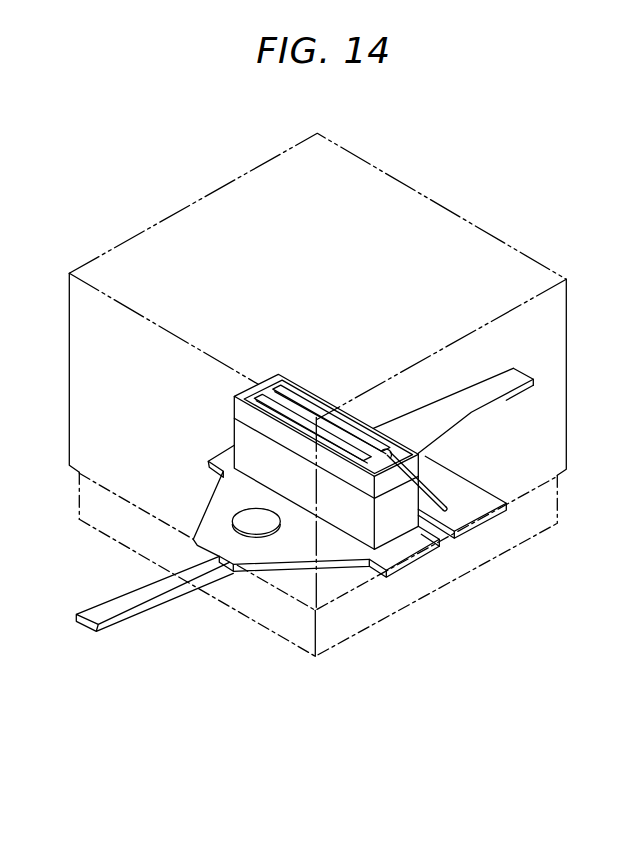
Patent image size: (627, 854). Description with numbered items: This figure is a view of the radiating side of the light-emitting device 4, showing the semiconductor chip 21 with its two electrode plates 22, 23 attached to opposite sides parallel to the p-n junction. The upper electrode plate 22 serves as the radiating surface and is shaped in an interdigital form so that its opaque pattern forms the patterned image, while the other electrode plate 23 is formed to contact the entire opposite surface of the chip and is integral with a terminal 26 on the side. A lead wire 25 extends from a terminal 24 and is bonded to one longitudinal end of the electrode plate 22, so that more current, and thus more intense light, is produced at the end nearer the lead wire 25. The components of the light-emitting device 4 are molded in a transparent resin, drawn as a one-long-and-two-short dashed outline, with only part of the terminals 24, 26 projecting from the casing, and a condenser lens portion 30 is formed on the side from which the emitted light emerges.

The housing 4 is at (131, 192).
The condenser lens portion 30 is at (372, 210).
The semiconductor chip 21 is at (400, 522).
The electrode plate 22 is at (380, 453).
The electrode plate 23 is at (430, 534).
The terminal 24 is at (458, 512).
The lead wire 25 is at (427, 480).
The terminal 26 is at (245, 552).